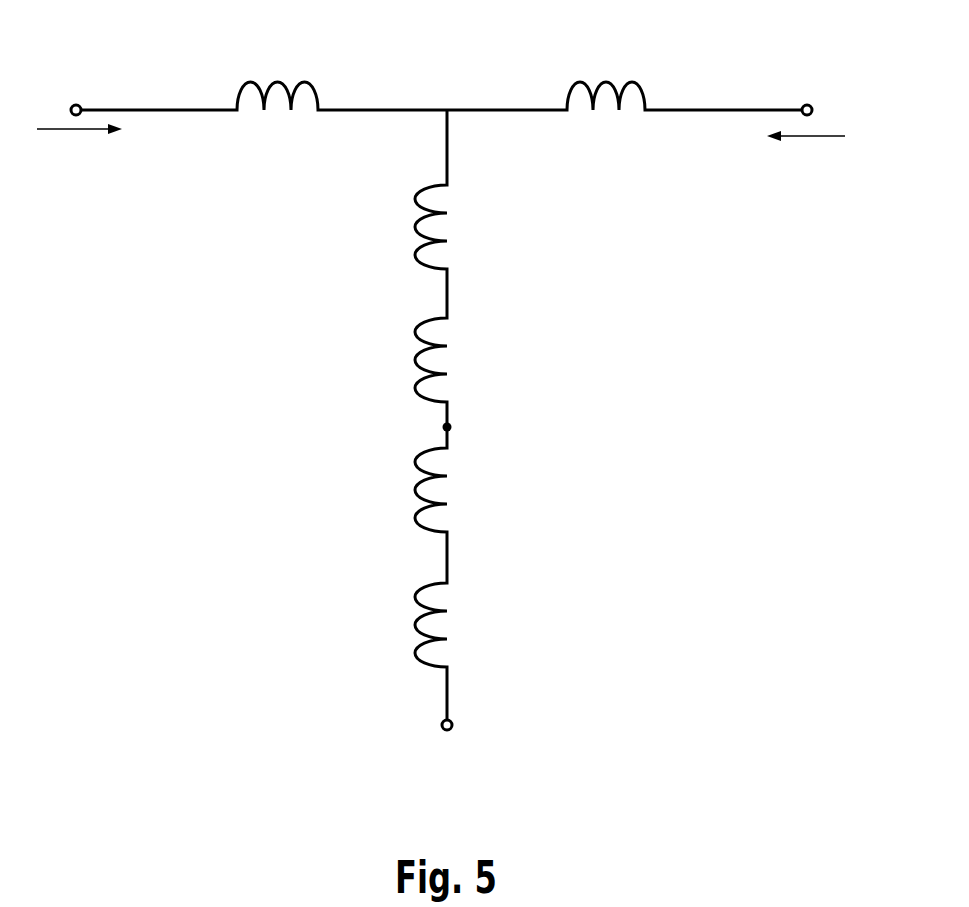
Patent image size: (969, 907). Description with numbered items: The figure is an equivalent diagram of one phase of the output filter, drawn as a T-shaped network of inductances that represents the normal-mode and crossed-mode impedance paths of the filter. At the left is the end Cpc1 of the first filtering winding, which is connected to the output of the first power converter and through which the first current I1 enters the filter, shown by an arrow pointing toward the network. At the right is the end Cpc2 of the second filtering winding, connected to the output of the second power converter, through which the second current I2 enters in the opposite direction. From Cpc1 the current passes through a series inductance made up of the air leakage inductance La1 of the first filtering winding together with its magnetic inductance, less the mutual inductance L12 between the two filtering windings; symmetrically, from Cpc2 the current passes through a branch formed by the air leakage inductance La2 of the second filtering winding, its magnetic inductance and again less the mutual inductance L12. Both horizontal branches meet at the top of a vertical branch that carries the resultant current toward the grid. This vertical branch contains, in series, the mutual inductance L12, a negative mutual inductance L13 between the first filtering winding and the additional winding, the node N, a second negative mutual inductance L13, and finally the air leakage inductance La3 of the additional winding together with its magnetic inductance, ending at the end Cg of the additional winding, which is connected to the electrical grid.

The end of first filtering winding Cpc1 is at (72, 89).
The end of second filtering winding Cpc2 is at (825, 89).
The first current I1 is at (79, 150).
The second current I2 is at (806, 153).
The air leakage inductance of the first filtering winding La1 is at (281, 73).
The air leakage inductance of the second filtering winding La2 is at (606, 73).
The mutual inductance between the filtering windings L12 is at (404, 227).
The mutual inductance between the first filtering winding and the additional winding L13 is at (392, 425).
The neutral node N is at (463, 426).
The air leakage inductance of the additional winding La3 is at (359, 625).
The end of additional winding Cg is at (473, 725).